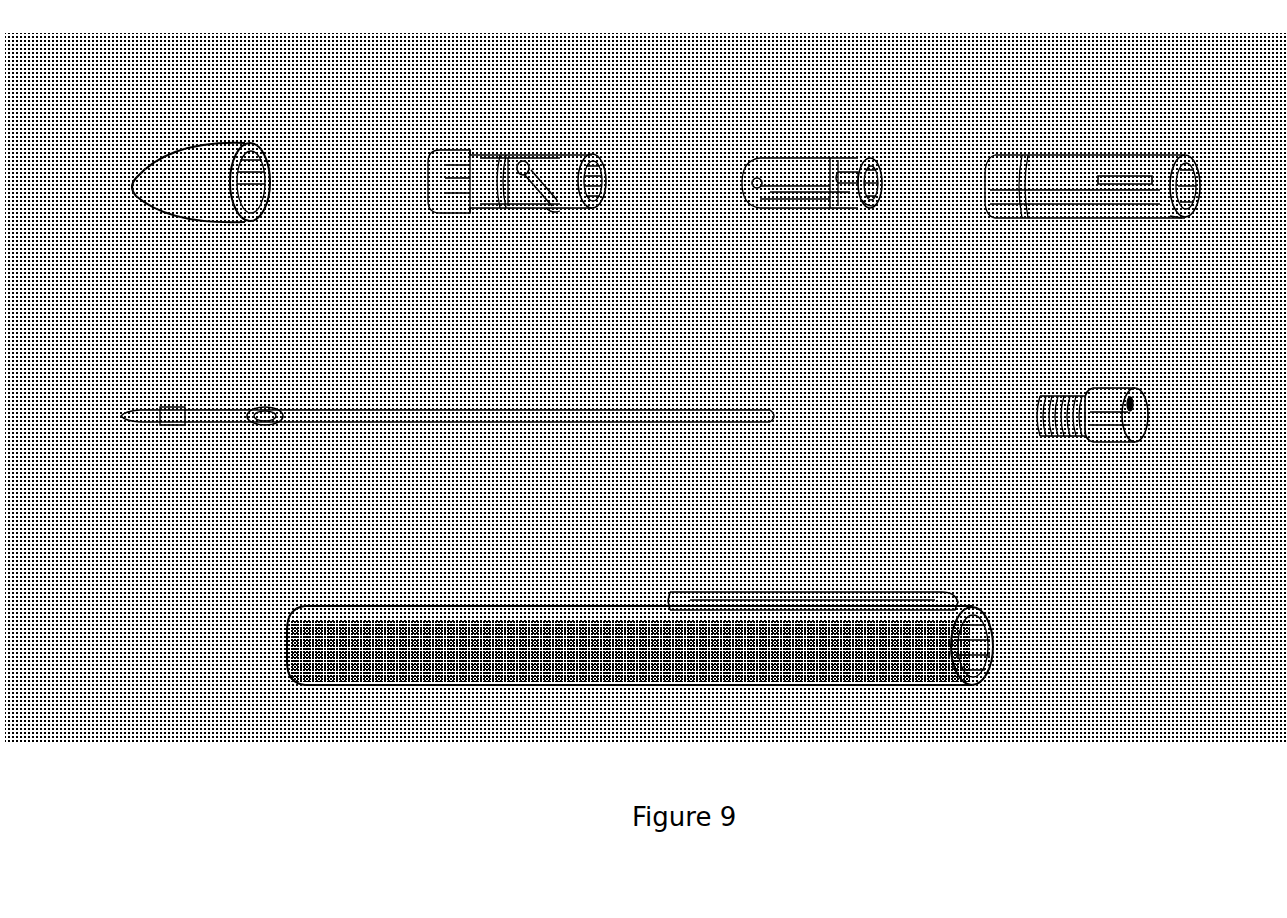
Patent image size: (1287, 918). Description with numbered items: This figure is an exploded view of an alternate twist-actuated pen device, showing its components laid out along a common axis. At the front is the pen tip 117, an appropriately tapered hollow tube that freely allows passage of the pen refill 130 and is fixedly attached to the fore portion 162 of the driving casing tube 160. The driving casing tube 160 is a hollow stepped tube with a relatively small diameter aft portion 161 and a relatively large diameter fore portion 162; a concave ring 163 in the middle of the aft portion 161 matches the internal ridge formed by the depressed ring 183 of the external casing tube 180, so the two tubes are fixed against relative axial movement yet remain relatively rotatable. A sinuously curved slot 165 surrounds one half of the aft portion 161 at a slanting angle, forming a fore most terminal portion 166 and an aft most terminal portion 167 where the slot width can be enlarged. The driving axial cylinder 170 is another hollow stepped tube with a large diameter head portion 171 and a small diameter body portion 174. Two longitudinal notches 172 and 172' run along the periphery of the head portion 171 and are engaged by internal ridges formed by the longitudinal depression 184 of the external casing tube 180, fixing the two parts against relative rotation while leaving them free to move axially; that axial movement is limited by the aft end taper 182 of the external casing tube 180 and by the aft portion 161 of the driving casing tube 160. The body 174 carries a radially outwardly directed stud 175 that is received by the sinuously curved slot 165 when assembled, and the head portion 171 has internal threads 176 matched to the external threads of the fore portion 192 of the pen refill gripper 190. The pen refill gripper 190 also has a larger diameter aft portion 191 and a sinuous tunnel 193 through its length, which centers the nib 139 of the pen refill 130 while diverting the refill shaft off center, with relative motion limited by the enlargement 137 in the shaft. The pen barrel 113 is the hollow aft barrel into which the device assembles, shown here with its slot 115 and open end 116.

The pen barrel 113 is at (450, 620).
The slot 115 is at (757, 596).
The tube open end 116 is at (982, 645).
The pen tip 117 is at (185, 165).
The pen refill 130 is at (348, 385).
The enlargement 137 is at (265, 424).
The nib 139 is at (140, 408).
The driving casing tube 160 is at (528, 135).
The aft portion 161 is at (493, 160).
The fore portion 162 is at (443, 173).
The concave ring 163 is at (508, 213).
The sinuously curved slot 165 is at (548, 213).
The fore most terminal portion 166 is at (526, 165).
The aft most terminal portion 167 is at (555, 197).
The driving axial cylinder 170 is at (806, 145).
The head portion 171 is at (848, 158).
The longitudinal notch 172 is at (896, 147).
The longitudinal notch 172' is at (903, 182).
The body portion 174 is at (790, 192).
The stud 175 is at (756, 190).
The internal threads 176 is at (872, 203).
The external casing tube 180 is at (1090, 140).
The aft end taper 182 is at (1176, 214).
The depressed ring 183 is at (1022, 200).
The longitudinal depression 184 is at (1130, 177).
The pen refill gripper 190 is at (1090, 370).
The aft portion 191 is at (1110, 440).
The fore portion 192 is at (1045, 408).
The sinuous tunnel 193 is at (1133, 402).